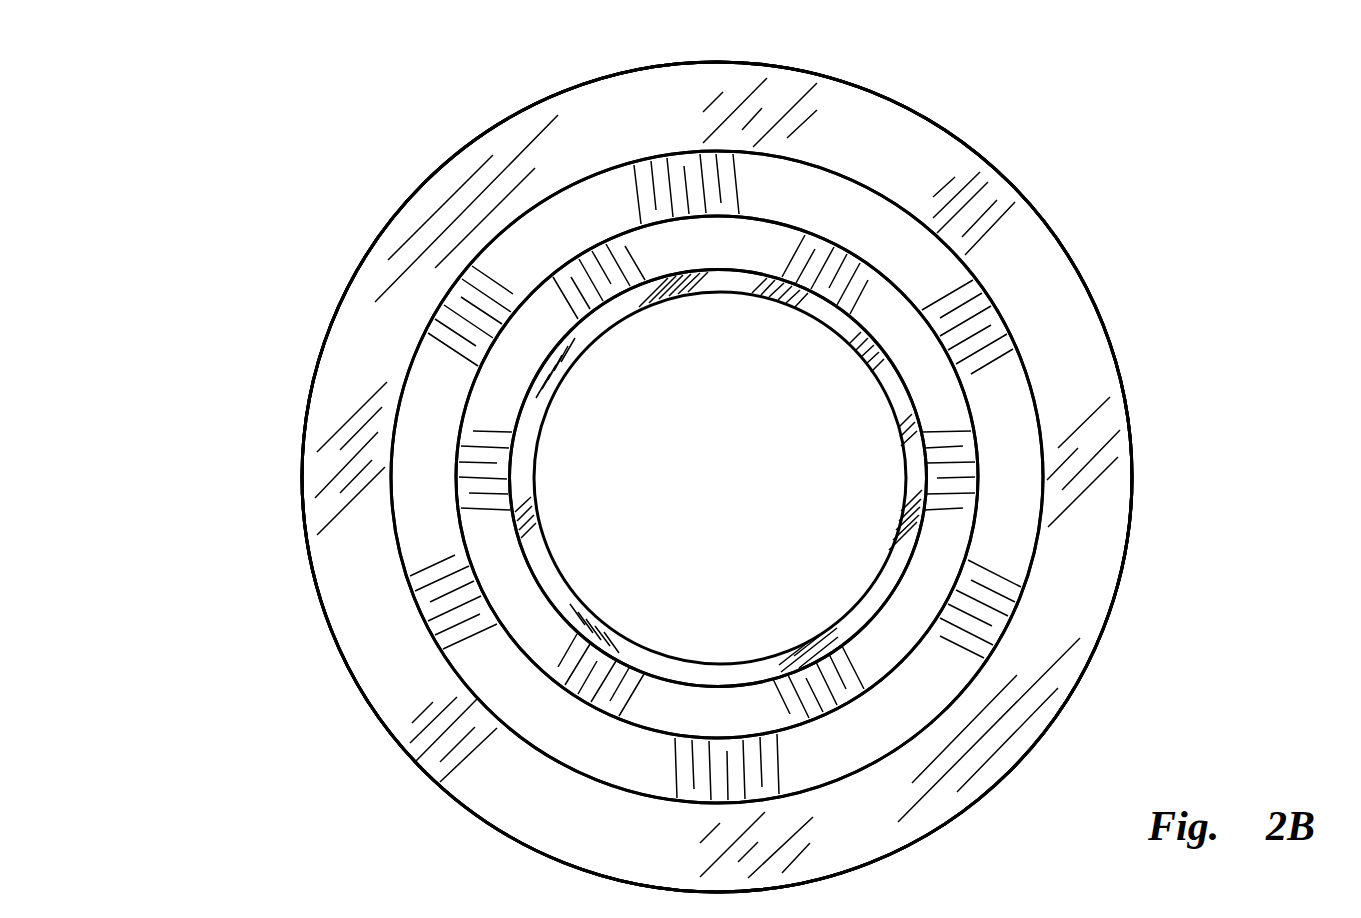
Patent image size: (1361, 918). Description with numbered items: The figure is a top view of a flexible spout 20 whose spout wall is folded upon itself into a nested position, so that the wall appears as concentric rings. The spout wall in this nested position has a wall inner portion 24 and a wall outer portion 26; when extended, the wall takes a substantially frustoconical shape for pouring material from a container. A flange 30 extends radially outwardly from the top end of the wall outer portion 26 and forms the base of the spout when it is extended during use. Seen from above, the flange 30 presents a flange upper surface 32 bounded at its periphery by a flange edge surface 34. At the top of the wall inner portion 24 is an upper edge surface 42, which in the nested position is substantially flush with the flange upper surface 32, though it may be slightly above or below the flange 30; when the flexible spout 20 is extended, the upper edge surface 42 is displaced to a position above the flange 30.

The flexible spout 20 is at (343, 243).
The flange 30 is at (1075, 213).
The flange edge surface 34 is at (979, 137).
The flange upper surface 32 is at (1060, 296).
The wall outer portion 26 is at (1016, 410).
The wall inner portion 24 is at (965, 528).
The upper edge surface 42 is at (516, 552).